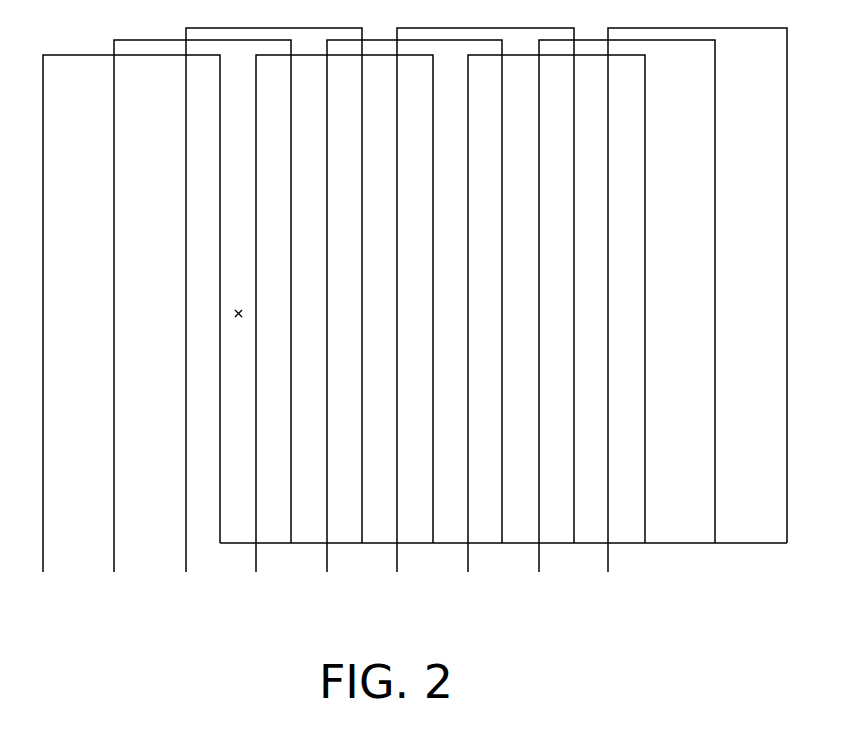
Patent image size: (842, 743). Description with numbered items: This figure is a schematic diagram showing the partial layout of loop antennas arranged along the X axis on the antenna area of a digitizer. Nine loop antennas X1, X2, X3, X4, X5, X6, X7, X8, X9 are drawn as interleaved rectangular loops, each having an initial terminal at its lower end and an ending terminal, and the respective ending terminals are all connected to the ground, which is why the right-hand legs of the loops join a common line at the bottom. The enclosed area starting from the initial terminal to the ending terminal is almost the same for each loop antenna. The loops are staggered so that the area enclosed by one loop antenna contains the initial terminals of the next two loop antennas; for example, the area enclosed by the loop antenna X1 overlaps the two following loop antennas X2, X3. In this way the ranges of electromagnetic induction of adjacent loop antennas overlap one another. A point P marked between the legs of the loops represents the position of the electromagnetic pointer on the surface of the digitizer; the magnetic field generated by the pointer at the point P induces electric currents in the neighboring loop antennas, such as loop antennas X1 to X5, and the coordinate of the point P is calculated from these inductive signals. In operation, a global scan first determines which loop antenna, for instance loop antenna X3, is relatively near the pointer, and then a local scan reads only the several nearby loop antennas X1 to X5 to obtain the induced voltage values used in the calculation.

The loop antenna X1 is at (121, 331).
The loop antenna X2 is at (192, 324).
The loop antenna X3 is at (264, 318).
The loop antenna X4 is at (334, 331).
The loop antenna X5 is at (404, 324).
The loop antenna X6 is at (475, 318).
The loop antenna X7 is at (546, 331).
The loop antenna X8 is at (617, 324).
The loop antenna X9 is at (687, 318).
The position of the electromagnetic pointer P is at (238, 295).